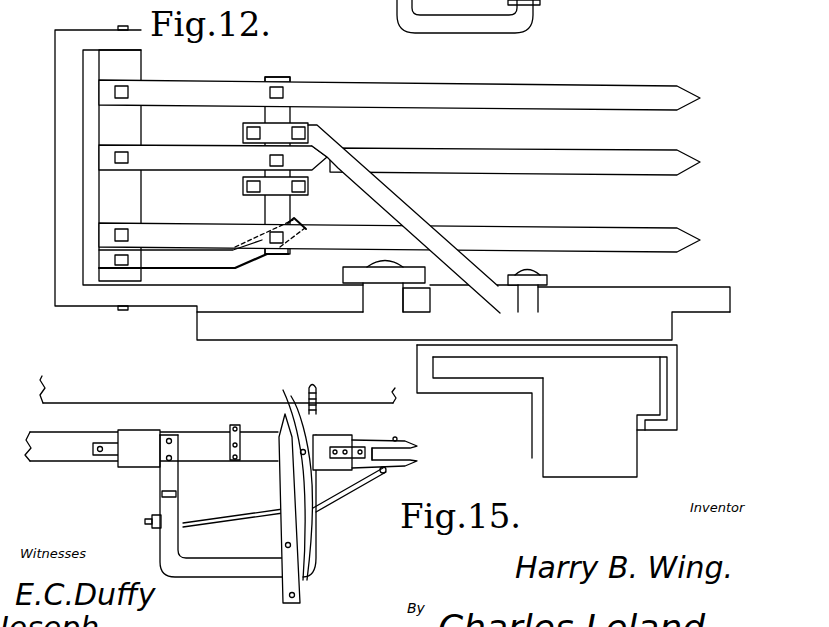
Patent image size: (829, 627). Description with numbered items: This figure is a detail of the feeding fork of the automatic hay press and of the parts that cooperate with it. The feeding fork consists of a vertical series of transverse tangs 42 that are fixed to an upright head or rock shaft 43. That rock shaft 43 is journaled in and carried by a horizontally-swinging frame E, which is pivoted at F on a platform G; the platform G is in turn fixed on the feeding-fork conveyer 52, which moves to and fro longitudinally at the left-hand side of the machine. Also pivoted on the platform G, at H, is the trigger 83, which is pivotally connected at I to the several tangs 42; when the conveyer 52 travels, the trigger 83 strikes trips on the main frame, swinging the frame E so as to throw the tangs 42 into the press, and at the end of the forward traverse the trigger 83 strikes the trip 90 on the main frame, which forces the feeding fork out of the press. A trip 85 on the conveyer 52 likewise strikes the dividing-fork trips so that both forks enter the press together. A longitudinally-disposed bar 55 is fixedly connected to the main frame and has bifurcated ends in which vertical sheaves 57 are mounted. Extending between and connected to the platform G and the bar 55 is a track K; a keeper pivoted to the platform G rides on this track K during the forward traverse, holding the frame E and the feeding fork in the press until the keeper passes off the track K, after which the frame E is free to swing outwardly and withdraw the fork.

In FIG. 12, the horizontally-swinging frame E is at (55, 122).
In FIG. 15, the horizontally-swinging frame E is at (317, 552).
In FIG. 12, the upright head or rock shaft 43 is at (133, 124).
In FIG. 12, the feeding-fork tangs 42 is at (568, 157).
In FIG. 15, the feeding-fork tangs 42 is at (278, 482).
In FIG. 12, the pivotal connection I is at (282, 132).
In FIG. 12, the trigger 83 is at (418, 205).
In FIG. 15, the trigger 83 is at (306, 434).
In FIG. 12, the pivot F is at (401, 287).
In FIG. 12, the pivot H is at (619, 289).
In FIG. 12, the platform G is at (463, 326).
In FIG. 15, the platform G is at (247, 578).
In FIG. 12, the feeding-fork conveyer 52 is at (679, 386).
In FIG. 15, the feeding-fork conveyer 52 is at (203, 441).
In FIG. 12, the longitudinally-disposed bar 55 is at (601, 417).
In FIG. 15, the longitudinally-disposed bar 55 is at (79, 462).
In FIG. 15, the trip 85 is at (242, 427).
In FIG. 15, the bolt 90 is at (318, 410).
In FIG. 15, the vertical sheaves 57 is at (387, 474).
In FIG. 15, the track K is at (246, 518).